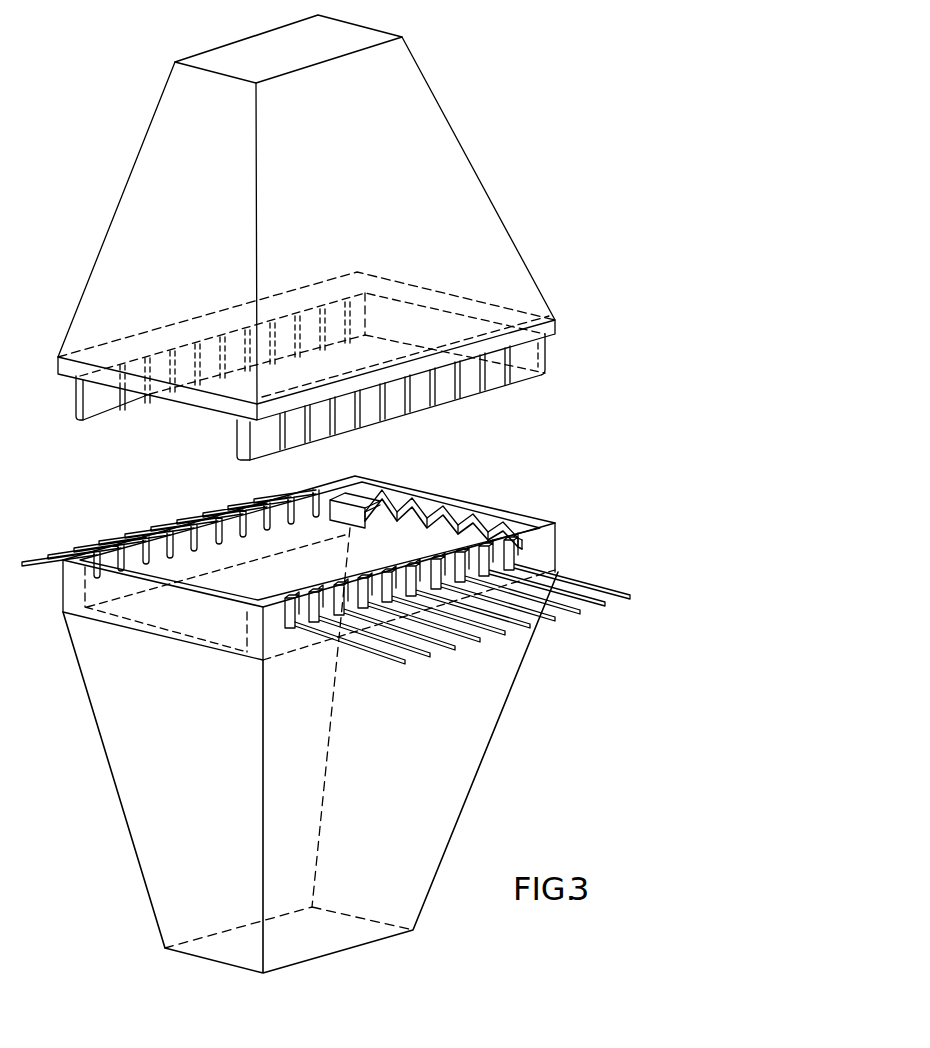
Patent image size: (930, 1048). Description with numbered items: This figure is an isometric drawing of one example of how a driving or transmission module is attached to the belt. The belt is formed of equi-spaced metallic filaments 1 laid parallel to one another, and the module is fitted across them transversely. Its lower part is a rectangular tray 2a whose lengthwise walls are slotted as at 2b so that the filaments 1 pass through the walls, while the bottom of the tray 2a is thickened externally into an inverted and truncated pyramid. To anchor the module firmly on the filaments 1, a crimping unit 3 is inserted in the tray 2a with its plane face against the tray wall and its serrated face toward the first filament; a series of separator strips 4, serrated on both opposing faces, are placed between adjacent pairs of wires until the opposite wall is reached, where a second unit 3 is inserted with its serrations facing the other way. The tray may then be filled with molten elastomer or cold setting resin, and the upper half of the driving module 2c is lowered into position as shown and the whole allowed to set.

The metallic filaments 1 is at (418, 655).
The rectangular tray 2a is at (100, 693).
The slots 2b is at (292, 630).
The upper half of the driving module 2c is at (448, 180).
The crimping unit 3 is at (485, 517).
The separator strips 4 is at (435, 520).